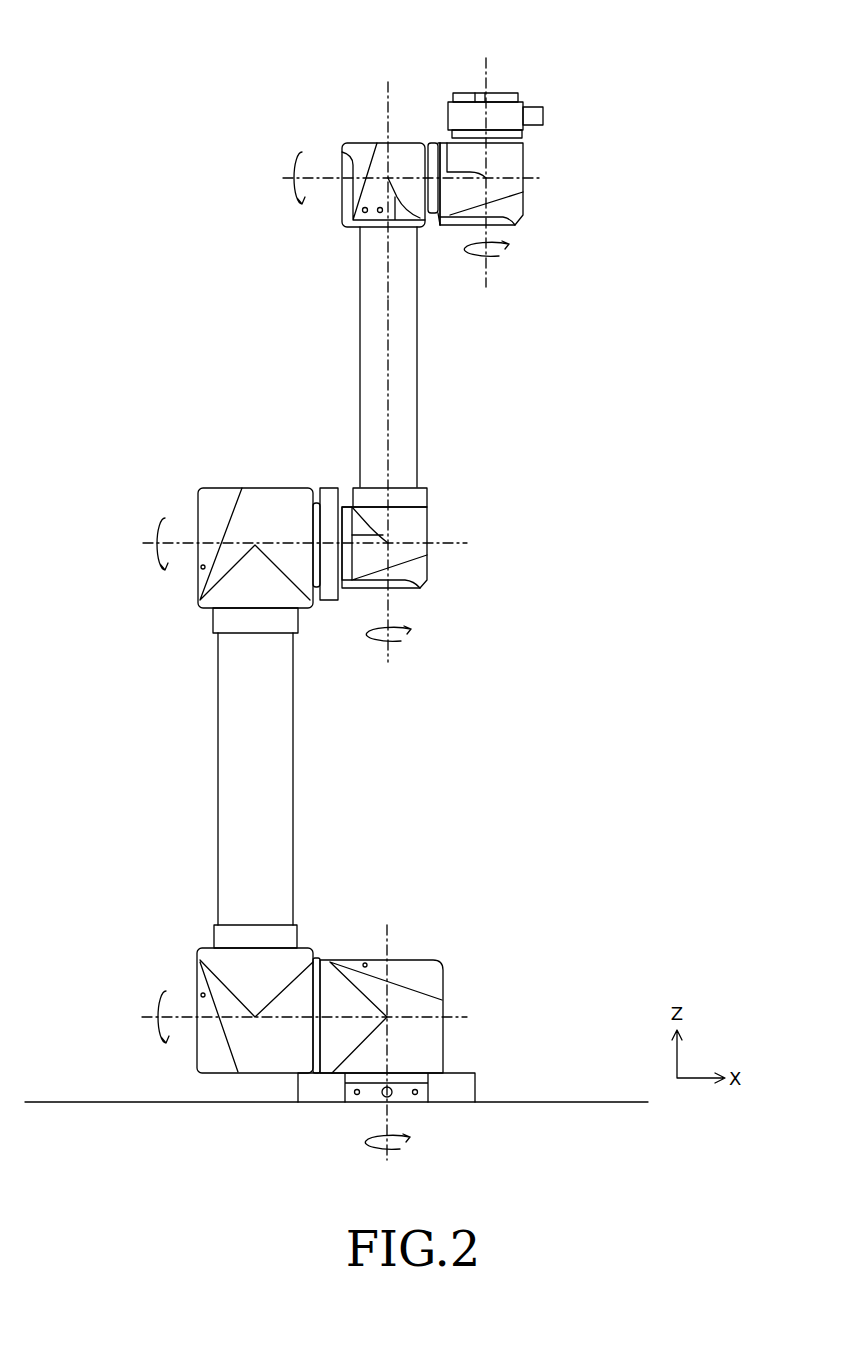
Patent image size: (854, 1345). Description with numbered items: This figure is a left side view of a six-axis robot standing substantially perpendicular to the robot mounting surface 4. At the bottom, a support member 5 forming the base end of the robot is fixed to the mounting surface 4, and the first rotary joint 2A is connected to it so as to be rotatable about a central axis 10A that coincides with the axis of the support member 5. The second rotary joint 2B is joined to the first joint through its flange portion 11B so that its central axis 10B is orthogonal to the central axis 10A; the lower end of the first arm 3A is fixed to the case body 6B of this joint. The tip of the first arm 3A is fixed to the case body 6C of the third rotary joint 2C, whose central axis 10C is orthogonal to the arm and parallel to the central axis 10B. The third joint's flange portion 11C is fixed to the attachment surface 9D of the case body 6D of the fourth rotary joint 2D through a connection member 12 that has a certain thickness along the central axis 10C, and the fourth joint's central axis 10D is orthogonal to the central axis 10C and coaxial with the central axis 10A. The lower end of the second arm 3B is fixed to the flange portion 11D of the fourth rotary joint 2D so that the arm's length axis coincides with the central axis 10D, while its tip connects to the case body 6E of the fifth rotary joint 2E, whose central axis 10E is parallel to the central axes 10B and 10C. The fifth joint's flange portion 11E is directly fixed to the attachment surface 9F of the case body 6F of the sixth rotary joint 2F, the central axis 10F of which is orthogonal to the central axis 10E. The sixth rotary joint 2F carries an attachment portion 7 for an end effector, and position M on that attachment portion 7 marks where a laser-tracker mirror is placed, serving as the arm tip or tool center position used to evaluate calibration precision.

The first rotary joint 2A is at (418, 960).
The second rotary joint 2B is at (219, 1013).
The third rotary joint 2C is at (245, 516).
The fourth rotary joint 2D is at (410, 547).
The fifth rotary joint 2E is at (369, 147).
The sixth rotary joint 2F is at (506, 184).
The first arm 3A is at (218, 750).
The second arm 3B is at (417, 363).
The robot mounting surface 4 is at (553, 1102).
The support member 5 is at (460, 1073).
The case body 6B is at (197, 957).
The case body 6C is at (215, 487).
The case body 6D is at (427, 520).
The case body 6E is at (383, 142).
The case body 6F is at (523, 203).
The attachment portion 7 is at (448, 142).
The attachment surface 9D is at (342, 507).
The attachment surface 9F is at (435, 145).
The central axis 10A is at (387, 1153).
The central axis 10B is at (147, 1013).
The central axis 10C is at (147, 540).
The central axis 10D is at (388, 647).
The central axis 10E is at (282, 177).
The central axis 10F is at (486, 263).
The flange portion 11B is at (317, 958).
The flange portion 11C is at (315, 502).
The flange portion 11D is at (427, 502).
The flange portion 11E is at (423, 143).
The connection member 12 is at (322, 488).
The position M is at (487, 97).